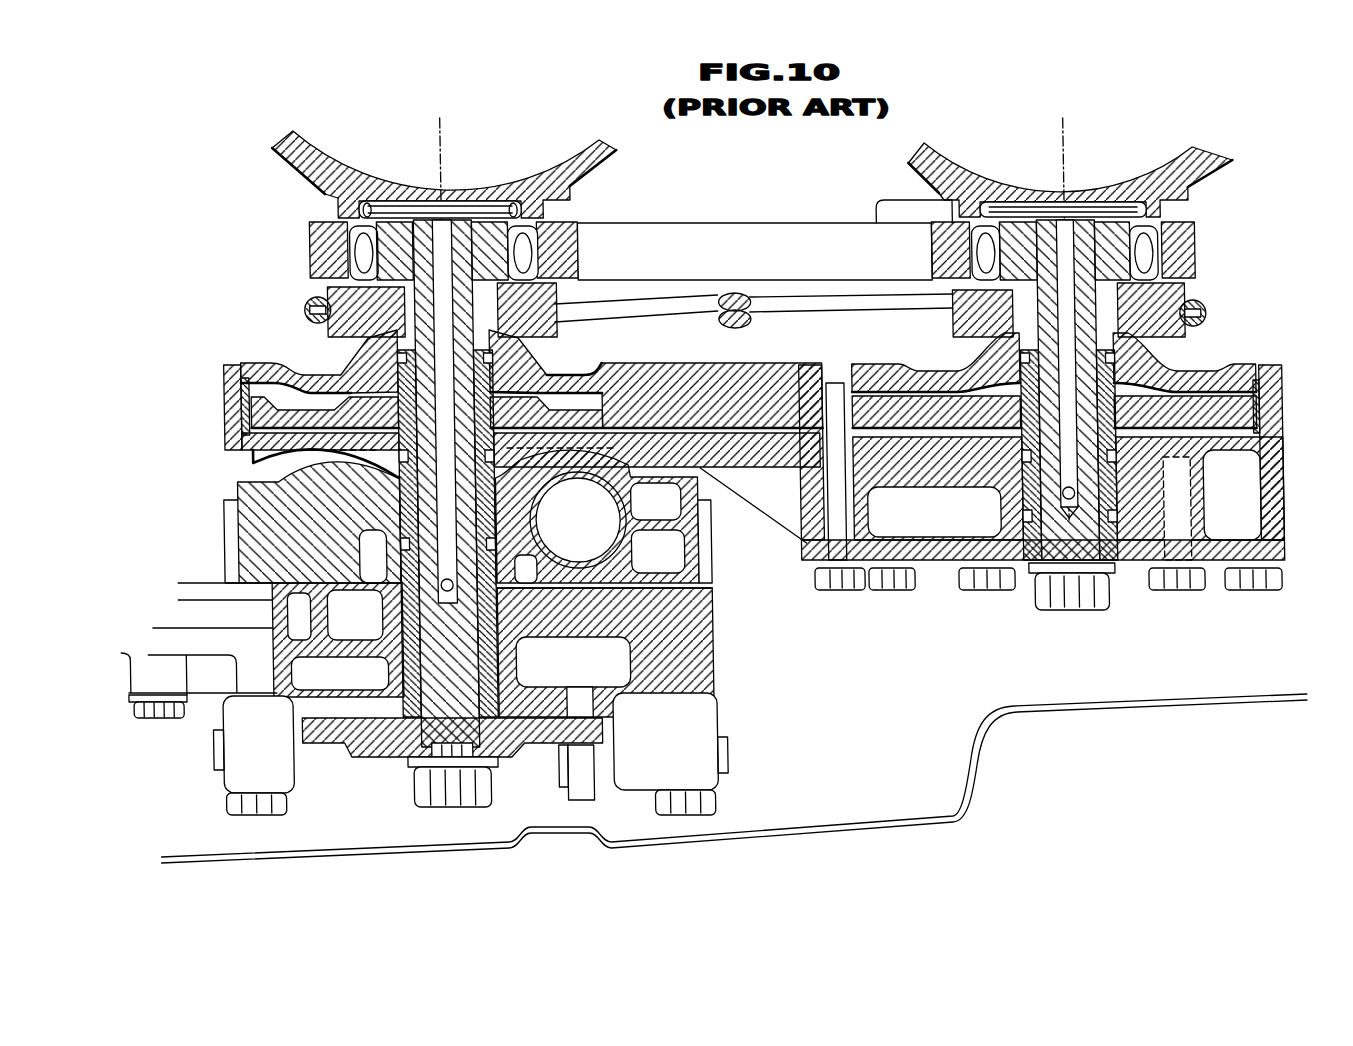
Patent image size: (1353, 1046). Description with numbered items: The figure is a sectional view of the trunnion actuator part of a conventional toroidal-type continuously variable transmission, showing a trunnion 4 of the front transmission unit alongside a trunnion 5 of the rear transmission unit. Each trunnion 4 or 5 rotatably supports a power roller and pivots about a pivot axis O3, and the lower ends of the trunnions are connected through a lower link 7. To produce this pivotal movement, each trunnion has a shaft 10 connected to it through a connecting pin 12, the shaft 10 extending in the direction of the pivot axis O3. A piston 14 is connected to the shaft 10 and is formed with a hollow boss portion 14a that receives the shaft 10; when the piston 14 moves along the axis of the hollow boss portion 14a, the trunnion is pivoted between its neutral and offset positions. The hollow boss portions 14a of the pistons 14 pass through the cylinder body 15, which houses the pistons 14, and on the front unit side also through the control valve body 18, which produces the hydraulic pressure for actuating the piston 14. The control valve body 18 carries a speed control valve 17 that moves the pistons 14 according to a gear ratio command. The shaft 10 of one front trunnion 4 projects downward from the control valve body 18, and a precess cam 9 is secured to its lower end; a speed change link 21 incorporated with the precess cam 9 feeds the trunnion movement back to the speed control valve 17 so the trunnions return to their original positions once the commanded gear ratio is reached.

The trunnion 4 is at (306, 177).
The trunnion 5 is at (1195, 167).
The lower link 7 is at (320, 248).
The precess cam 9 is at (532, 730).
The shaft 10 is at (423, 343).
The connecting pin 12 is at (386, 203).
The piston 14 is at (272, 413).
The hollow boss portion 14a is at (405, 513).
The cylinder body 15 is at (225, 446).
The speed control valve 17 is at (600, 541).
The control valve body 18 is at (247, 553).
The speed change link 21 is at (577, 780).
The pivot axis O3 is at (1070, 138).